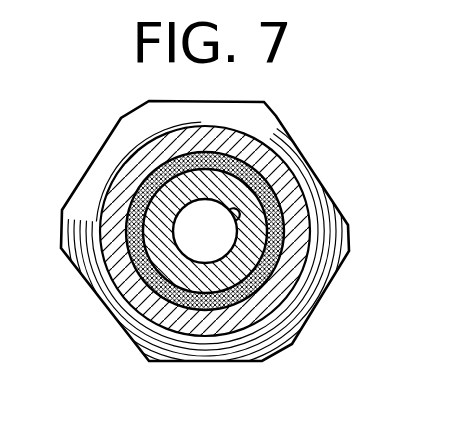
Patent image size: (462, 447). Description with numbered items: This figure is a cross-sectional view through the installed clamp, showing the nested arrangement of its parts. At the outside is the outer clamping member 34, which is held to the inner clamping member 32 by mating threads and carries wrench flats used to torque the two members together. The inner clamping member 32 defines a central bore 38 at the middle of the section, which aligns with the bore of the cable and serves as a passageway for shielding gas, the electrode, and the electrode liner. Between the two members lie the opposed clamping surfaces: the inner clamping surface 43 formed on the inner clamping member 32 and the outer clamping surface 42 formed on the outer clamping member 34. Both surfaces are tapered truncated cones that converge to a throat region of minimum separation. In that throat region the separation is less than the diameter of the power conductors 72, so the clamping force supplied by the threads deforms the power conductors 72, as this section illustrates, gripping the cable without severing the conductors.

The inner clamping member 32 is at (272, 109).
The outer clamping member 34 is at (279, 281).
The central bore 38 is at (231, 213).
The outer clamping surface 42 is at (253, 250).
The inner clamping surface 43 is at (233, 216).
The power conductors 72 is at (159, 155).